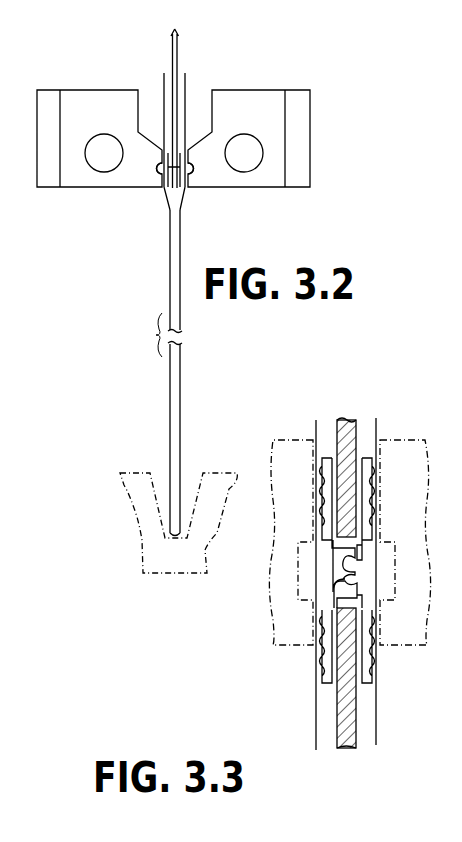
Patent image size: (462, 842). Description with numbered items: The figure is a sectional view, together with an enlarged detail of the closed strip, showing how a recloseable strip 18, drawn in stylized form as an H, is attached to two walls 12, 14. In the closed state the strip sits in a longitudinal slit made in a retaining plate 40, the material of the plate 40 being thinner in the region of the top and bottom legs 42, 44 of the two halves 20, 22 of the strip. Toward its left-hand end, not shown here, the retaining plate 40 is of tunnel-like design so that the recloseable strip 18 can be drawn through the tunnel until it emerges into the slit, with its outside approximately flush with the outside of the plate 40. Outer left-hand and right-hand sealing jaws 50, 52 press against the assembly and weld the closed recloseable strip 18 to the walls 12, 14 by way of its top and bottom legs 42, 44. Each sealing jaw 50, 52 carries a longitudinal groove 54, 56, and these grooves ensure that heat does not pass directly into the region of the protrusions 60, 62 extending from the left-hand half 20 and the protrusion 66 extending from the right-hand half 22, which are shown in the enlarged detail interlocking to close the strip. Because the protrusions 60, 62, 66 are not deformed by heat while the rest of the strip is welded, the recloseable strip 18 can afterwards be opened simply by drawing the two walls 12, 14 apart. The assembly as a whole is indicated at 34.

In FIG. 3.2, the wall 12 is at (163, 94).
In FIG. 3.3, the wall 12 is at (316, 726).
In FIG. 3.2, the wall 14 is at (186, 104).
In FIG. 3.3, the wall 14 is at (374, 731).
In FIG. 3.3, the recloseable strip 18 is at (370, 544).
In FIG. 3.3, the left-hand half of the recloseable strip 20 is at (320, 466).
In FIG. 3.3, the right-hand half of the recloseable strip 22 is at (365, 459).
In FIG. 3.2, the probe assembly 34 is at (238, 63).
In FIG. 3.2, the retaining plate 40 is at (172, 55).
In FIG. 3.3, the retaining plate 40 is at (344, 736).
In FIG. 3.3, the top leg 42 is at (322, 484).
In FIG. 3.3, the bottom leg 44 is at (324, 640).
In FIG. 3.2, the left-hand sealing jaw 50 is at (78, 182).
In FIG. 3.2, the right-hand sealing jaw 52 is at (276, 182).
In FIG. 3.2, the longitudinal groove 54 is at (156, 178).
In FIG. 3.2, the longitudinal groove 56 is at (192, 177).
In FIG. 3.3, the protrusion 60 is at (352, 514).
In FIG. 3.3, the protrusion 62 is at (352, 580).
In FIG. 3.3, the protrusion 66 is at (345, 588).